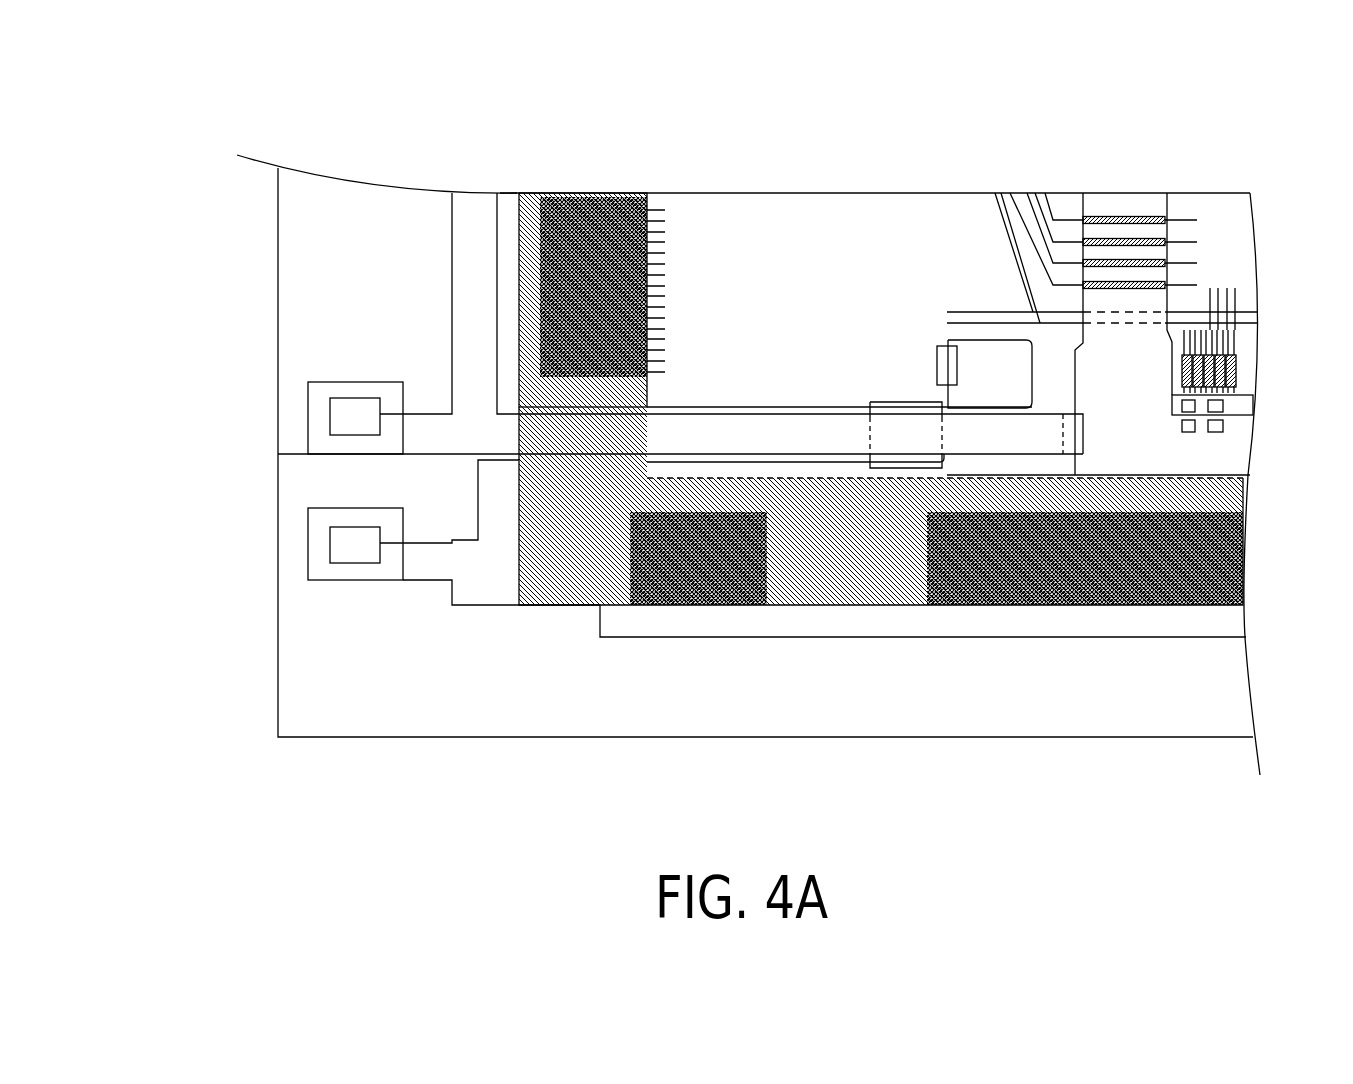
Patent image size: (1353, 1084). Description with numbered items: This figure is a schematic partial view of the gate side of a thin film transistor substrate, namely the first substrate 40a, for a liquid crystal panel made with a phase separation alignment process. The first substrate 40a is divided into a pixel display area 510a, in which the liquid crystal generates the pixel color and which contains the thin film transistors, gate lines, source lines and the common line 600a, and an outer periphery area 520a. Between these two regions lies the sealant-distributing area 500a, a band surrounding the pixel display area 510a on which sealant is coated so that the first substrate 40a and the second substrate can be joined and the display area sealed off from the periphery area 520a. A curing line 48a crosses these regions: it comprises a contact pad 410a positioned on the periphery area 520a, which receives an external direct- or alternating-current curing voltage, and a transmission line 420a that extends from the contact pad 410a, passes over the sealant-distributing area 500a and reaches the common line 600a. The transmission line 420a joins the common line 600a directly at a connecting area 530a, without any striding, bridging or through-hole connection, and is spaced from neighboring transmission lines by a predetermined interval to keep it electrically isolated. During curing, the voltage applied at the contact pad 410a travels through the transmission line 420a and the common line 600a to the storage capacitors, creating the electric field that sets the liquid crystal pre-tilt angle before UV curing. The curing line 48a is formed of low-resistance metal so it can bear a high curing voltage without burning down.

The first substrate 40a is at (390, 735).
The curing line 48a is at (310, 453).
The contact pad 410a is at (340, 398).
The periphery area 520a is at (345, 630).
The sealant-distributing area 500a is at (540, 196).
The transmission line 420a is at (688, 440).
The pixel display area 510a is at (840, 313).
The connecting area 530a is at (1067, 440).
The common line 600a is at (1187, 445).